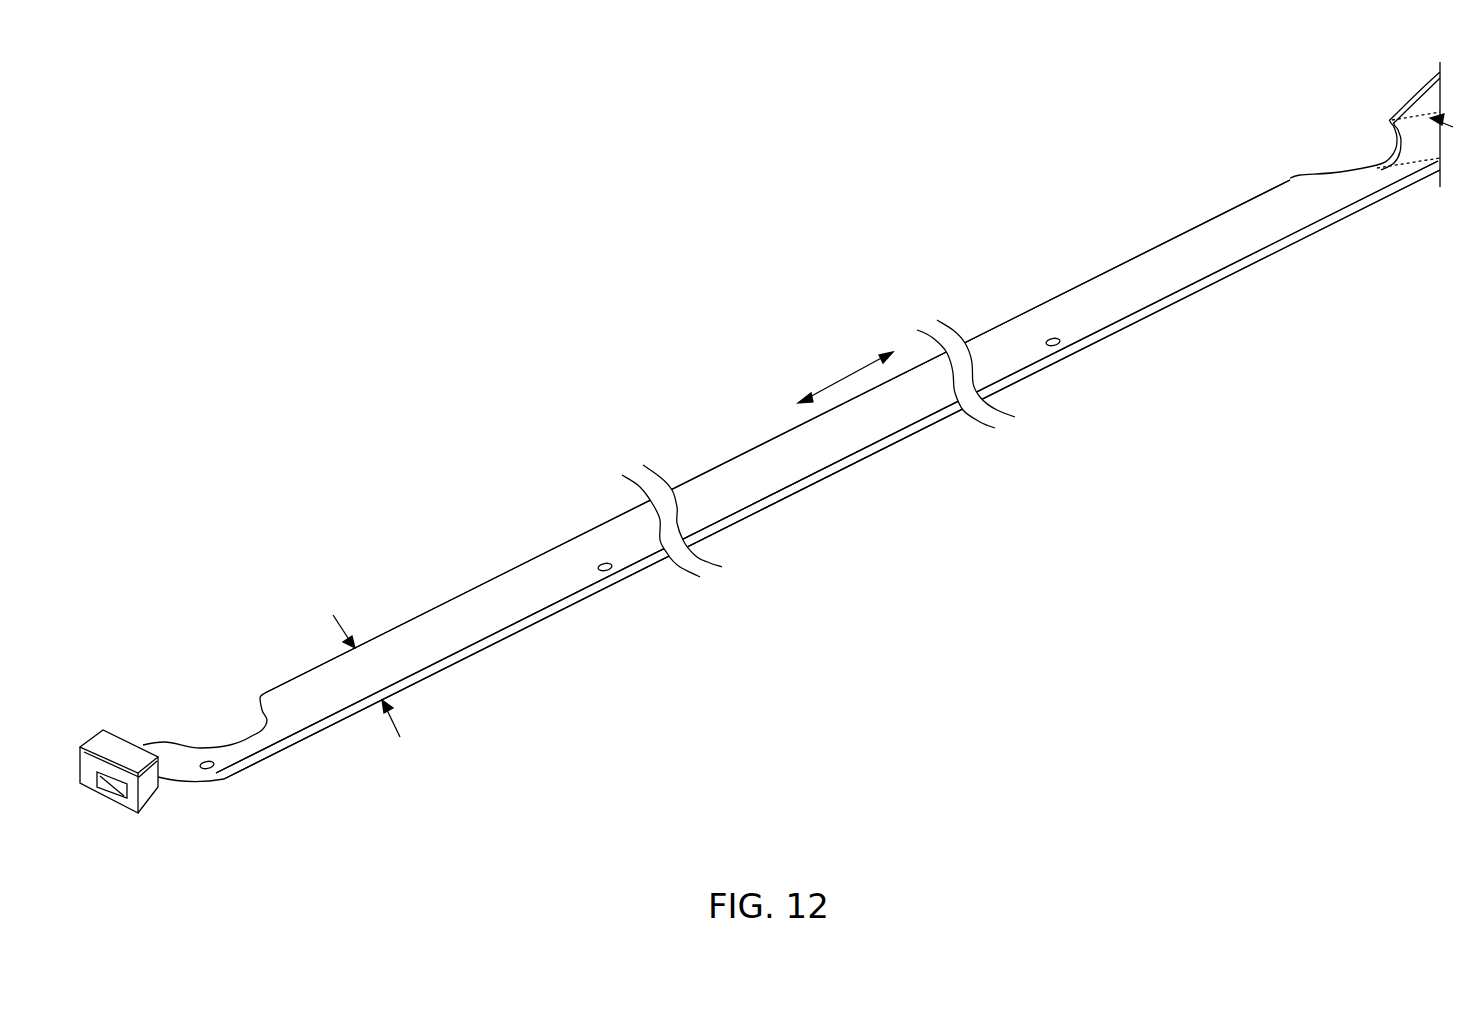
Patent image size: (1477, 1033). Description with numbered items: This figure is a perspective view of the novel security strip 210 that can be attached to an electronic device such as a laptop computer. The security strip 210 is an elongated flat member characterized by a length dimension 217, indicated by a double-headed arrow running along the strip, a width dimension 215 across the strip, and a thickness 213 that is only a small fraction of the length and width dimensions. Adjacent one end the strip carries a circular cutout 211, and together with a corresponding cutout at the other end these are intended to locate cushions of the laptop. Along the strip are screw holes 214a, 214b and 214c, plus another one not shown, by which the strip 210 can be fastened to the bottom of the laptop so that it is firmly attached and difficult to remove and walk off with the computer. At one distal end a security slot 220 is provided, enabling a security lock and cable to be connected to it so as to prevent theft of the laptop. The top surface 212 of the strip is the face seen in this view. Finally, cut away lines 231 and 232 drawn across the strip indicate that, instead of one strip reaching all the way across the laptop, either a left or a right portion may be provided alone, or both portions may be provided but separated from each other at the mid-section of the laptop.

The security strip 210 is at (760, 493).
The circular cutout 211 is at (230, 742).
The top surface of bracket 212 is at (525, 583).
The thickness 213 is at (1357, 155).
The screw hole 214a is at (212, 768).
The screw hole 214b is at (612, 571).
The screw hole 214c is at (1060, 348).
The width dimension 215 is at (347, 623).
The length dimension 217 is at (848, 375).
The security slot 220 is at (113, 740).
The cut away line 231 is at (660, 470).
The cut away line 232 is at (937, 320).